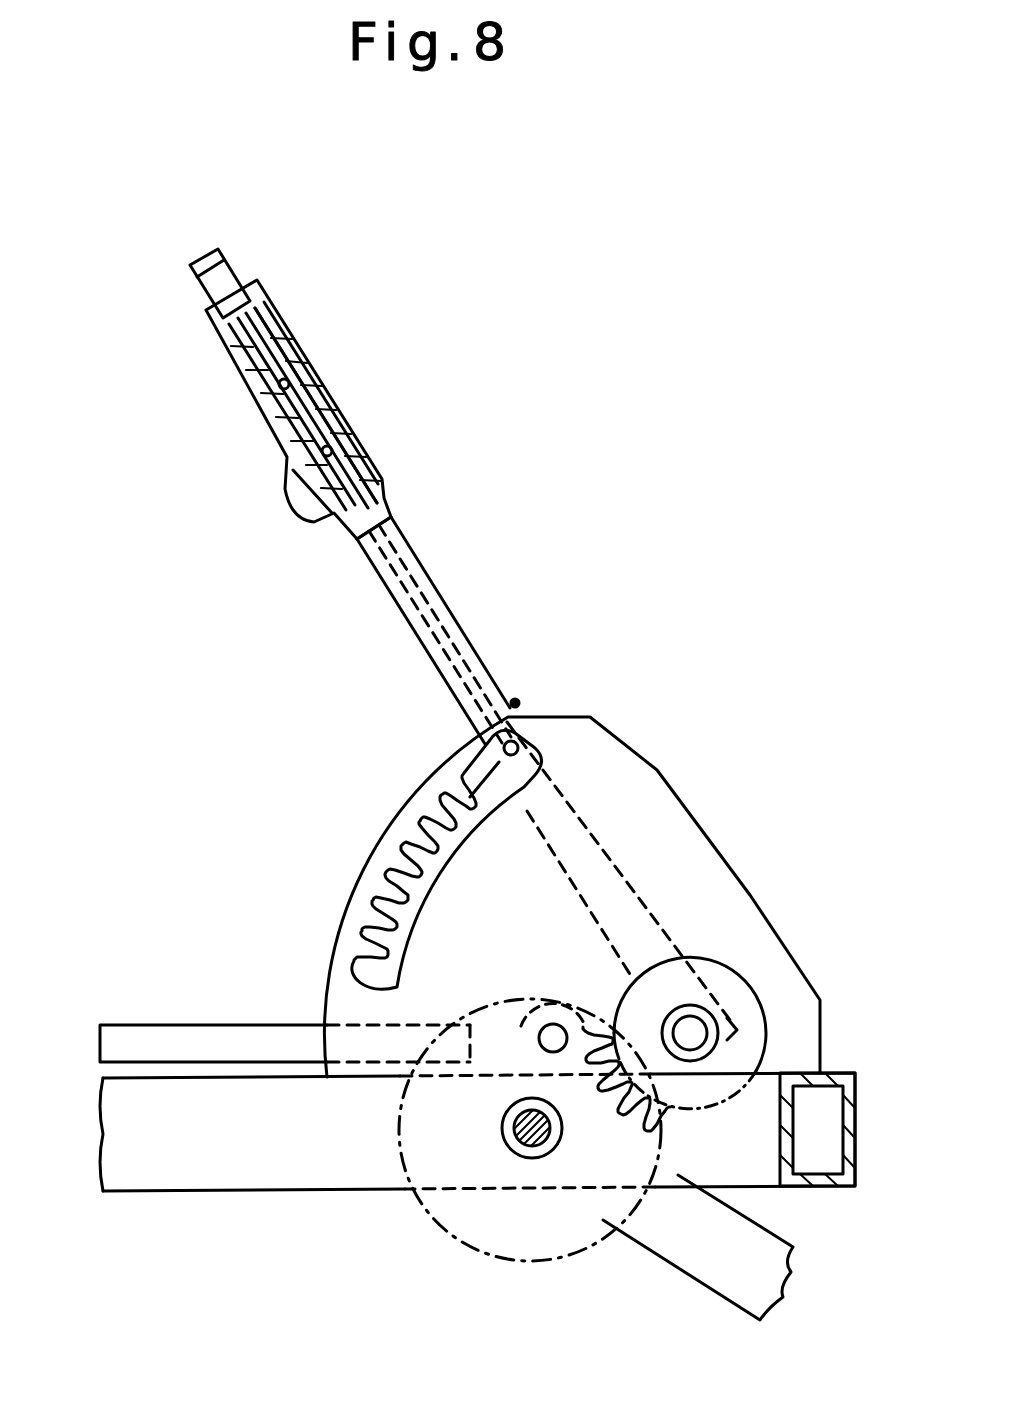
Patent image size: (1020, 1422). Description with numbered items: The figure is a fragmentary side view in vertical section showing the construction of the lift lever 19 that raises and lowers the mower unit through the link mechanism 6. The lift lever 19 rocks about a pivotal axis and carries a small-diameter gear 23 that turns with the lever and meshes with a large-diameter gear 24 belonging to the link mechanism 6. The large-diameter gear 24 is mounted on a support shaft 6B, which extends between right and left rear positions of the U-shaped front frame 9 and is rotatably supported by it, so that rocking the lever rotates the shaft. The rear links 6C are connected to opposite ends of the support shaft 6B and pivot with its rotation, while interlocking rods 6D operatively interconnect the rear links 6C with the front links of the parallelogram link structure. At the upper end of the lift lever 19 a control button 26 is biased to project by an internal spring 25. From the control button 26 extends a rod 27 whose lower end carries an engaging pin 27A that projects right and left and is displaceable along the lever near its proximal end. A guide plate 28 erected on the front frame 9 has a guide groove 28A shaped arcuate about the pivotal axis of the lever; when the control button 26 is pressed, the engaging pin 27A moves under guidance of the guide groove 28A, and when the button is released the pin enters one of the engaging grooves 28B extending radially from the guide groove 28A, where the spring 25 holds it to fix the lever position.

The link mechanism 6 is at (267, 1020).
The support shaft 6B is at (530, 1150).
The rear links 6C is at (680, 1253).
The interlocking rods 6D is at (177, 1023).
The front frame 9 is at (137, 1193).
The lift lever 19 is at (438, 580).
The small-diameter gear 23 is at (740, 970).
The large-diameter gear 24 is at (433, 1210).
The spring 25 is at (275, 337).
The control button 26 is at (205, 296).
The rod 27 is at (350, 458).
The engaging pin 27A is at (503, 744).
The guide plate 28 is at (634, 750).
The guide groove 28A is at (482, 803).
The engaging grooves 28B is at (387, 887).